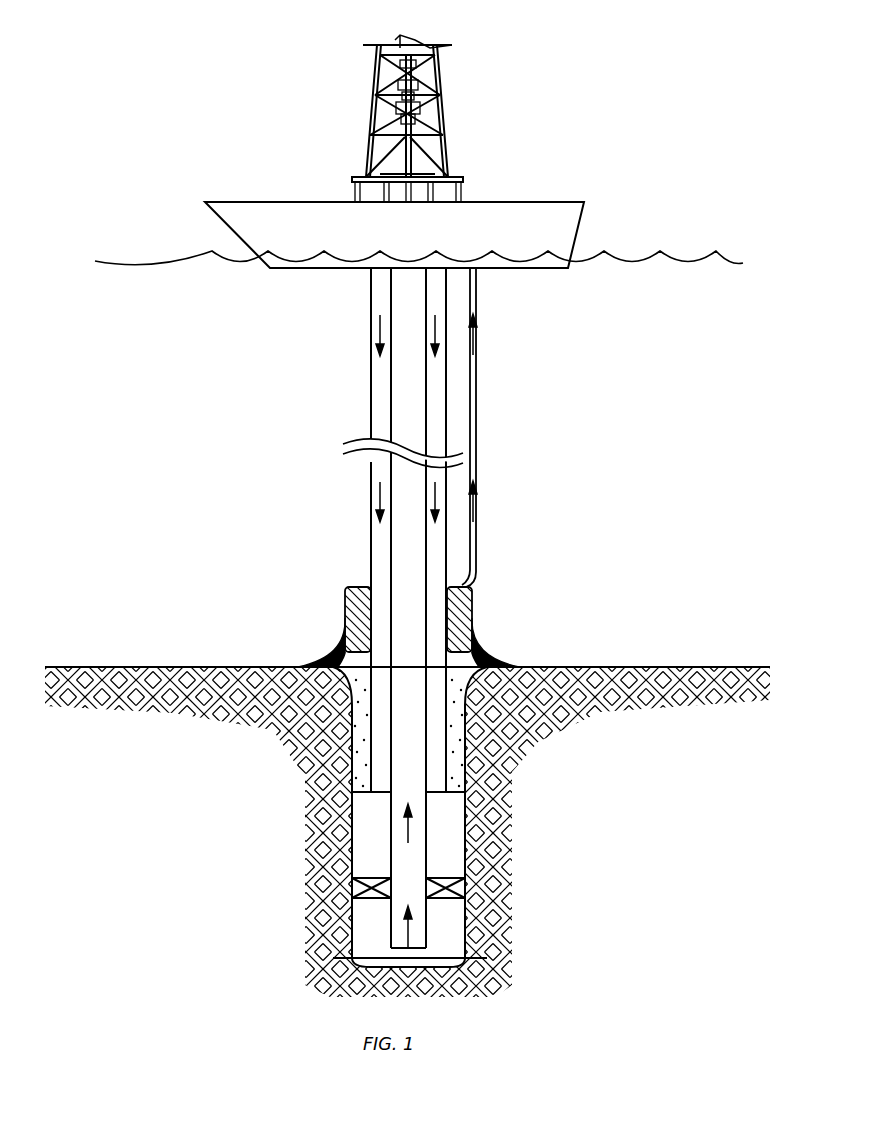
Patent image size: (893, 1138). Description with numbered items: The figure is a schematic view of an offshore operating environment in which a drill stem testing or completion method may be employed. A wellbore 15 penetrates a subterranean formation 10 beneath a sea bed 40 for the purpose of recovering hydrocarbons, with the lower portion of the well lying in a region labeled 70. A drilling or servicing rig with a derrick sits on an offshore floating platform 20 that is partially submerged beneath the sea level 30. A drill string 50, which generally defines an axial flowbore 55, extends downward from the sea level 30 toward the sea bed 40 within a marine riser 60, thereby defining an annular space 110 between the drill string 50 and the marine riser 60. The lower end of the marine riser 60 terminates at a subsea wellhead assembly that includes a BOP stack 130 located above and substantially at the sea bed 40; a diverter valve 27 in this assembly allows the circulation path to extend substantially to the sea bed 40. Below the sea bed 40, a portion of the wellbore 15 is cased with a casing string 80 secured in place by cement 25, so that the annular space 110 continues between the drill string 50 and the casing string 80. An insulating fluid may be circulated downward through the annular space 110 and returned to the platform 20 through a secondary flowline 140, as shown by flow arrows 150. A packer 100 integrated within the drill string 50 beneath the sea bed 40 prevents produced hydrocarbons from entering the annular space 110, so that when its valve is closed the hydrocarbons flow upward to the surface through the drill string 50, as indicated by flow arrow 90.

The subterranean formation 10 is at (206, 706).
The wellbore 15 is at (452, 840).
The offshore floating platform 20 is at (238, 202).
The cement 25 is at (448, 766).
The diverter valve 27 is at (318, 656).
The sea level 30 is at (122, 264).
The sea bed 40 is at (92, 665).
The drill string 50 is at (386, 394).
The axial flowbore 55 is at (415, 398).
The marine riser 60 is at (371, 368).
The production zone 70 is at (288, 934).
The casing string 80 is at (462, 742).
The flow arrow 90 is at (396, 823).
The packer 100 is at (468, 884).
The annular space 110 is at (376, 540).
The BOP stack 130 is at (466, 598).
The secondary flowline 140 is at (476, 428).
The flow arrows 150 is at (372, 330).